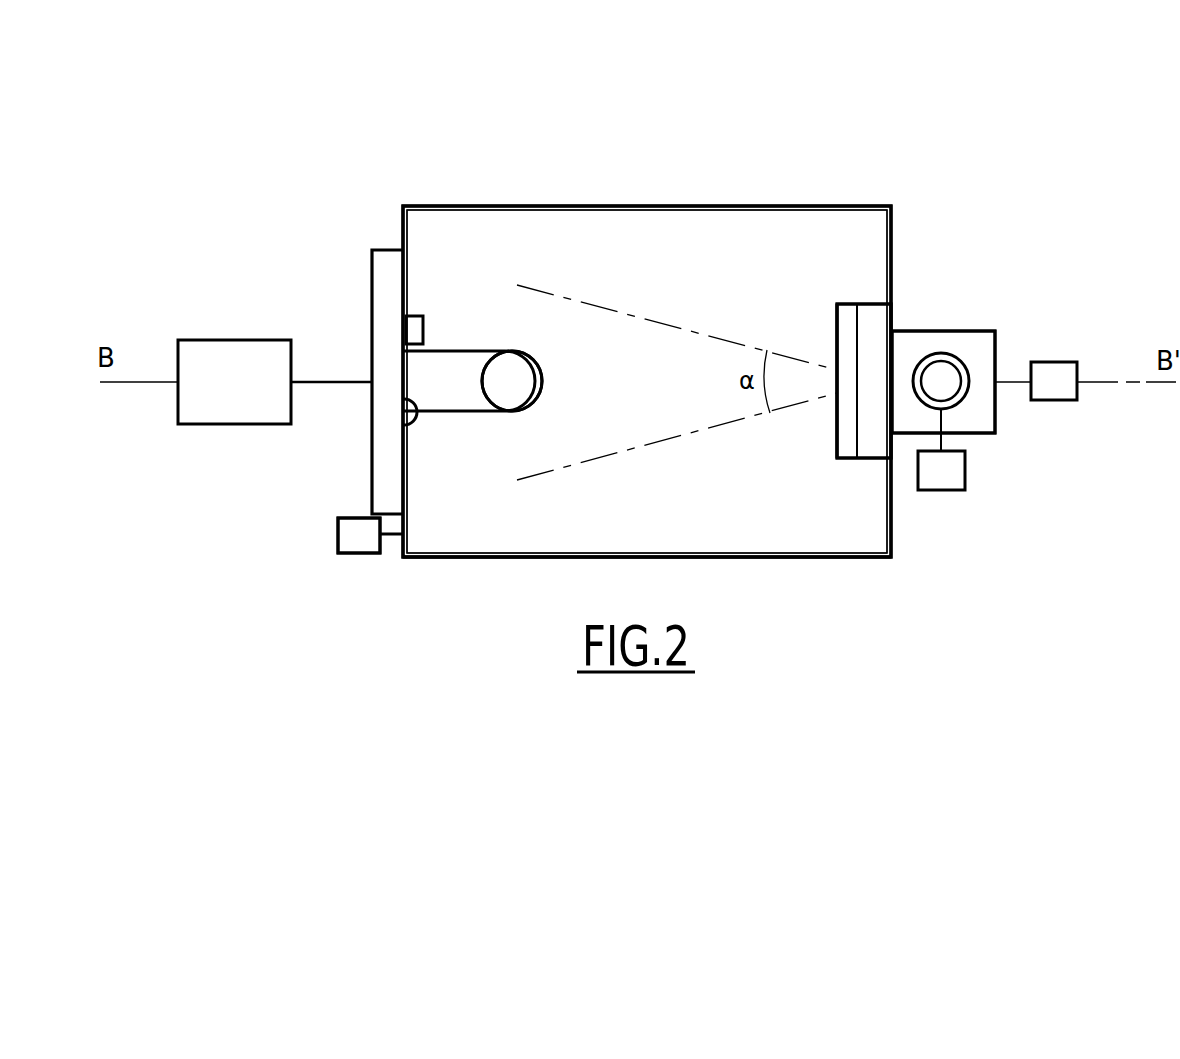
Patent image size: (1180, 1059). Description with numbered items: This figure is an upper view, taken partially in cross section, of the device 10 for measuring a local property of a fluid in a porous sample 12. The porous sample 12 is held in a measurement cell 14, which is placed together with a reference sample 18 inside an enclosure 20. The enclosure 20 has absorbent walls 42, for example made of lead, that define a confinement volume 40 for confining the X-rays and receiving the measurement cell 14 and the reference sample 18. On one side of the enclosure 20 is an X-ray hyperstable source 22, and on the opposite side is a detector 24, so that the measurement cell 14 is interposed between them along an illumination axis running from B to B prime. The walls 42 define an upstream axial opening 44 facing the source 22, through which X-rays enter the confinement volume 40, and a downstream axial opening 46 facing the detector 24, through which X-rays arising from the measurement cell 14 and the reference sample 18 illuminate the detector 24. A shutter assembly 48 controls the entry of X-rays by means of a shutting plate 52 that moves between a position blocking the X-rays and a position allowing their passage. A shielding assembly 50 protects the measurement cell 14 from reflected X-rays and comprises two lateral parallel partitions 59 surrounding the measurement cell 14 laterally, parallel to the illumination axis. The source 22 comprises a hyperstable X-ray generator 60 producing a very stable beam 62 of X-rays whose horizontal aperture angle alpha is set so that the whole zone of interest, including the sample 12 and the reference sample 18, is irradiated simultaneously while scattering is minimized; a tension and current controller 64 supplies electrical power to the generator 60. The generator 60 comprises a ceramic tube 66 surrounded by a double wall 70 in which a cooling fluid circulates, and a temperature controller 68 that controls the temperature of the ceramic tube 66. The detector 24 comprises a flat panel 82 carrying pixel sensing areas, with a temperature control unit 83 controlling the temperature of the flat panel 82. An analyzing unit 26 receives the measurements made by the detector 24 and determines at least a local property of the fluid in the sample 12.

The device 10 is at (828, 580).
The porous sample 12 is at (513, 381).
The measurement cell 14 is at (558, 407).
The reference sample 18 is at (416, 310).
The enclosure 20 is at (623, 203).
The X-ray hyperstable source 22 is at (970, 318).
The detector 24 is at (350, 565).
The analyzing unit 26 is at (217, 337).
The confinement volume 40 is at (647, 381).
The absorbent walls 42 is at (533, 560).
The upstream axial opening 44 is at (868, 338).
The downstream axial opening 46 is at (415, 404).
The shutter assembly 48 is at (833, 423).
The shielding assembly 50 is at (455, 488).
The shutting plate 52 is at (847, 447).
The lateral parallel partitions 59 is at (472, 348).
The hyperstable X-ray generator 60 is at (996, 442).
The beam 62 is at (692, 332).
The tension and current controller 64 is at (1047, 388).
The ceramic tube 66 is at (938, 373).
The temperature controller 68 is at (938, 473).
The double wall 70 is at (967, 368).
The flat panel 82 is at (382, 275).
The temperature control unit 83 is at (348, 528).